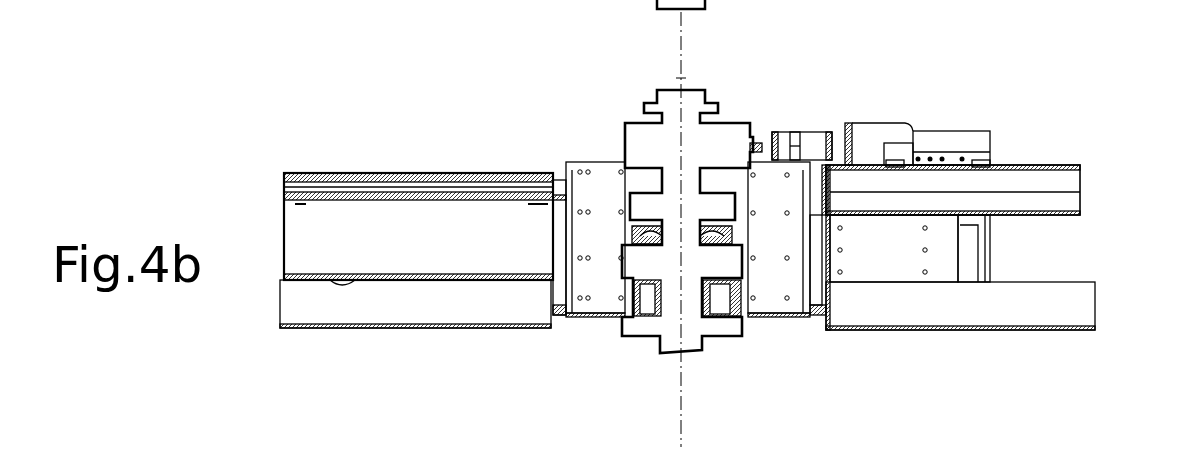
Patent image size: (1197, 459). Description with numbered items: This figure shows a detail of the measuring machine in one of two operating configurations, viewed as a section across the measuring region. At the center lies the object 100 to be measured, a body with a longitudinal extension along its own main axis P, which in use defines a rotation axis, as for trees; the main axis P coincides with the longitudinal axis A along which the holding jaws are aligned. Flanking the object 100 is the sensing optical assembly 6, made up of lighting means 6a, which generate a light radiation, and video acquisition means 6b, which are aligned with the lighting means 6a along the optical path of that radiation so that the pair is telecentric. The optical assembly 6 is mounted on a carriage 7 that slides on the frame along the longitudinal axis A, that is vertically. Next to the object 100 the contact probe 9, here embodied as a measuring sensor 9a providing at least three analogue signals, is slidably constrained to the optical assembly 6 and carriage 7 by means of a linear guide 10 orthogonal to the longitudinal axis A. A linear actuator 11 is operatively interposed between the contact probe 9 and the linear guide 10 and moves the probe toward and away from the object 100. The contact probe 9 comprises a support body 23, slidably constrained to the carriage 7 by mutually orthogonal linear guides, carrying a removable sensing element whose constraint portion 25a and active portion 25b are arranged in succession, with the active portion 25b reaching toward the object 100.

The object 100 is at (693, 147).
The video acquisition means 6b is at (357, 240).
The sensing optical assembly 6 is at (879, 255).
The lighting means 6a is at (930, 258).
The carriage 7 is at (1016, 250).
The contact probe 9 is at (874, 125).
The measuring sensor 9a is at (762, 143).
The linear guide 10 is at (950, 160).
The linear actuator 11 is at (943, 140).
The support body 23 is at (792, 140).
The constraint portion 25a is at (790, 138).
The active portion 25b is at (756, 142).
The main axis P is at (677, 77).
The longitudinal axis A is at (680, 383).